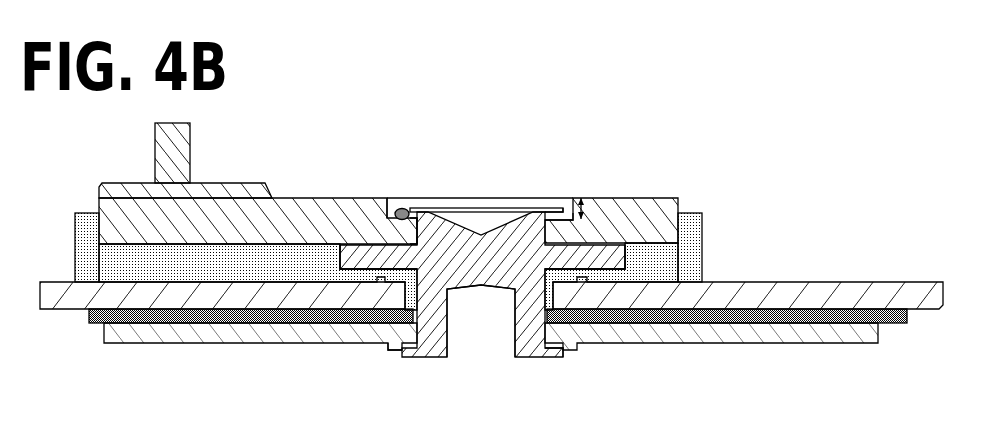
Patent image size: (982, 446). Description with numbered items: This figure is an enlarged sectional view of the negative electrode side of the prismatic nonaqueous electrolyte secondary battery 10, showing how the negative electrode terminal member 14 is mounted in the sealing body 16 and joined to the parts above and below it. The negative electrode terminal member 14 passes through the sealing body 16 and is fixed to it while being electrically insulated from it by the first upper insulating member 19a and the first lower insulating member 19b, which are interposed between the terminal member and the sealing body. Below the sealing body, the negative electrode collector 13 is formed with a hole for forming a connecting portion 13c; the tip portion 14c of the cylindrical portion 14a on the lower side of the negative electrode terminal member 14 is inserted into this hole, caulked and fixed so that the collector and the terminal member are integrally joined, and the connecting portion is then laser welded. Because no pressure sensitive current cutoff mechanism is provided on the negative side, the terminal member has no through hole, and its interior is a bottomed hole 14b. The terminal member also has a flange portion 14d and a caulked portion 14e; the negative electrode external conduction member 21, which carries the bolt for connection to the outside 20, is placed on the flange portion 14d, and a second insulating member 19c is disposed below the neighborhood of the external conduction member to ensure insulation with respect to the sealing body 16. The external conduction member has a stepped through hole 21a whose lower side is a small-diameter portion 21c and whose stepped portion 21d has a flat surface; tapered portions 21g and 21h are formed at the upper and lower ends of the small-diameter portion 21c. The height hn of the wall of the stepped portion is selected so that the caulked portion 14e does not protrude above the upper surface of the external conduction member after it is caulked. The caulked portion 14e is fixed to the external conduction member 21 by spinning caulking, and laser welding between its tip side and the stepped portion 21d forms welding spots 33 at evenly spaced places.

The prismatic nonaqueous electrolyte secondary battery 10 is at (882, 134).
The negative electrode collector 13 is at (143, 333).
The hole for forming a connecting portion 13c is at (409, 329).
The negative electrode terminal member 14 is at (497, 272).
The cylindrical portion 14a is at (438, 327).
The bottomed hole 14b is at (516, 207).
The tip portion 14c is at (567, 350).
The flange portion 14d is at (362, 250).
The caulked portion 14e is at (553, 210).
The sealing body 16 is at (867, 290).
The first upper insulating member 19a is at (328, 255).
The first lower insulating member 19b is at (225, 316).
The second insulating member 19c is at (80, 218).
The bolt for connection to the outside 20 is at (155, 132).
The negative electrode external conduction member 21 is at (110, 210).
The stepped through hole 21a is at (504, 196).
The small-diameter portion 21c is at (389, 212).
The stepped portion 21d is at (567, 217).
The tapered portion 21g is at (420, 216).
The tapered portion 21h is at (423, 241).
The welding spot 33 is at (403, 209).
The height of the wall of the stepped portion hn is at (594, 210).